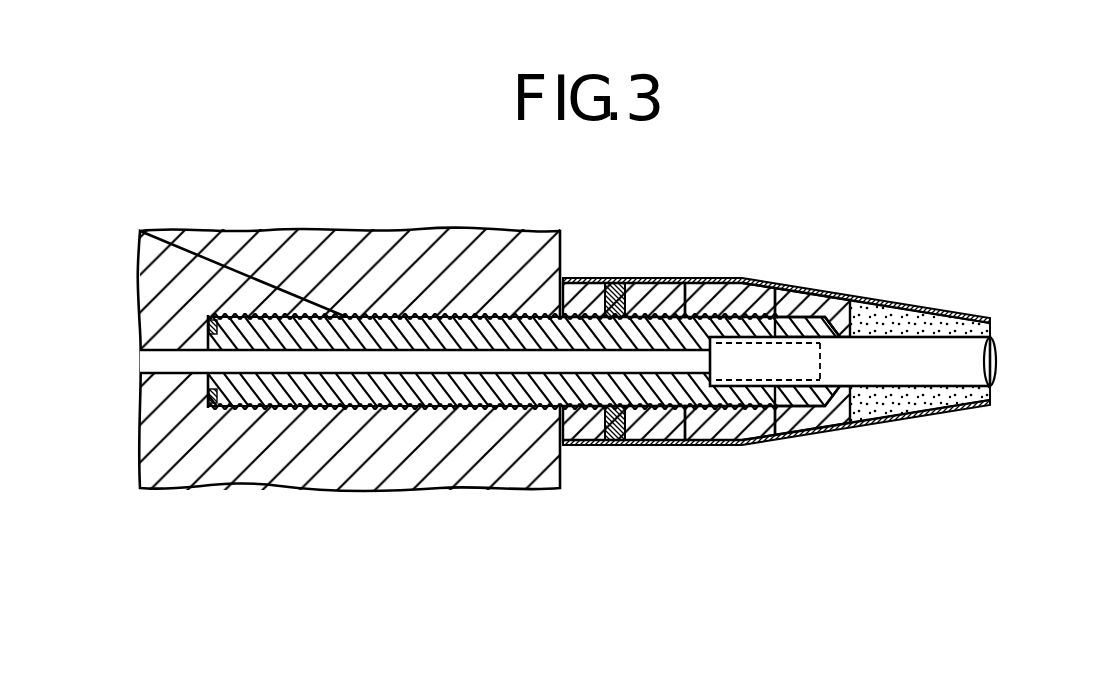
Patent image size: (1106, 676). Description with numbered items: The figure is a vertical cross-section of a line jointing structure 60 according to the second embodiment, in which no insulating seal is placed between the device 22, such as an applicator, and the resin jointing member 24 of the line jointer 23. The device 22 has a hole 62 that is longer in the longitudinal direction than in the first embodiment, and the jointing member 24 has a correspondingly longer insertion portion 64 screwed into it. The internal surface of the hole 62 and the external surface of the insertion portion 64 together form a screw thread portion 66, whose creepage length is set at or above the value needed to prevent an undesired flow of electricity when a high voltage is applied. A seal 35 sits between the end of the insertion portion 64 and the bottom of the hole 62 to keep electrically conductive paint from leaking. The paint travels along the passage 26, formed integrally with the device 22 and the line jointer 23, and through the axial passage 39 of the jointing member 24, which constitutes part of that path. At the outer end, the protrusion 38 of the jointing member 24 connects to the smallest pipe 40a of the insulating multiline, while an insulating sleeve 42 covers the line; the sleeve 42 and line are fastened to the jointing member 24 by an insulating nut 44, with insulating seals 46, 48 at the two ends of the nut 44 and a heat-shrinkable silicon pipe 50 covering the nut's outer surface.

The line jointing structure 60 is at (811, 157).
The device 22 is at (467, 233).
The hole 62 is at (325, 313).
The insertion portion 64 is at (458, 395).
The screw thread portion 66 is at (387, 408).
The seal 35 is at (214, 408).
The passage 26 is at (170, 372).
The passage 39 is at (513, 372).
The jointing member 24 is at (680, 312).
The protrusion 38 is at (676, 445).
The insulating seal 48 is at (613, 442).
The insulating nut 44 is at (802, 292).
The insulating sleeve 42 is at (789, 395).
The insulating seal 46 is at (920, 402).
The line jointer 23 is at (735, 445).
The pipe 50 is at (905, 300).
The pipe 40a is at (998, 346).